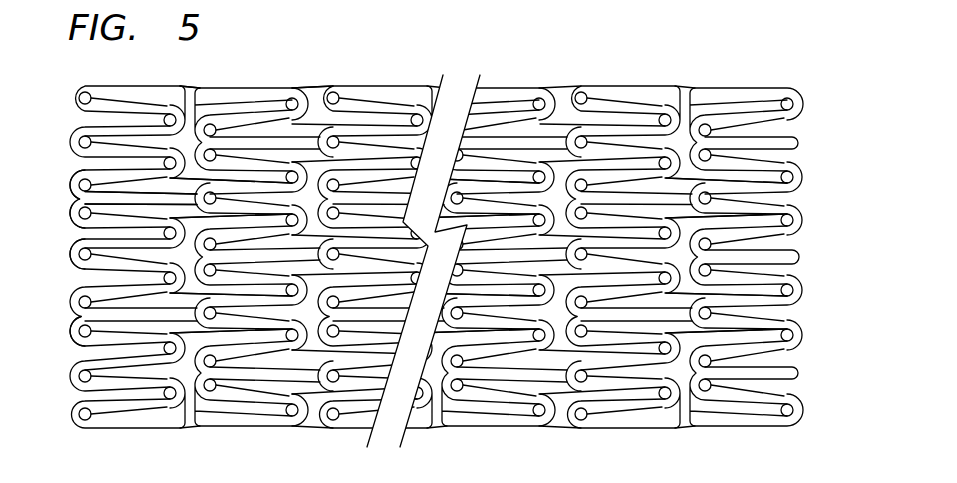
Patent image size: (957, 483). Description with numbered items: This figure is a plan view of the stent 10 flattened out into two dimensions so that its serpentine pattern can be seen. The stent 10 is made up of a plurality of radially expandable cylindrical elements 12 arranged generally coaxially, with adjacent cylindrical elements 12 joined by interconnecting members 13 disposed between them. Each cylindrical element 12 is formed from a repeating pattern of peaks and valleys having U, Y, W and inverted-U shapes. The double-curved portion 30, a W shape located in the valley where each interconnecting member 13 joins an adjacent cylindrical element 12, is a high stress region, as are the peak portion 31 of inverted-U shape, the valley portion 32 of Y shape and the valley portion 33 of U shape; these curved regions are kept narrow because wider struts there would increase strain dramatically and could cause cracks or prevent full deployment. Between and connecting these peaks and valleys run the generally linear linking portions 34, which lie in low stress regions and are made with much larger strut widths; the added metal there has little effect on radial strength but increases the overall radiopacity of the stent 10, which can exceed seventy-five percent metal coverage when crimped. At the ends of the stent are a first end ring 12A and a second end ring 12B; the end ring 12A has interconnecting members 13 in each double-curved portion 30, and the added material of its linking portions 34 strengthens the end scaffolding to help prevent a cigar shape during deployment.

The stent 10 is at (826, 135).
The cylindrical element 12 is at (347, 77).
The first end ring 12A is at (112, 431).
The second end ring 12B is at (746, 431).
The interconnecting member 13 is at (108, 204).
The double-curved portion (W) 30 is at (73, 195).
The peak portion (inverted-U) 31 is at (199, 112).
The valley portion (Y) 32 is at (322, 128).
The valley portion (U) 33 is at (72, 266).
The linking portion 34 is at (100, 331).